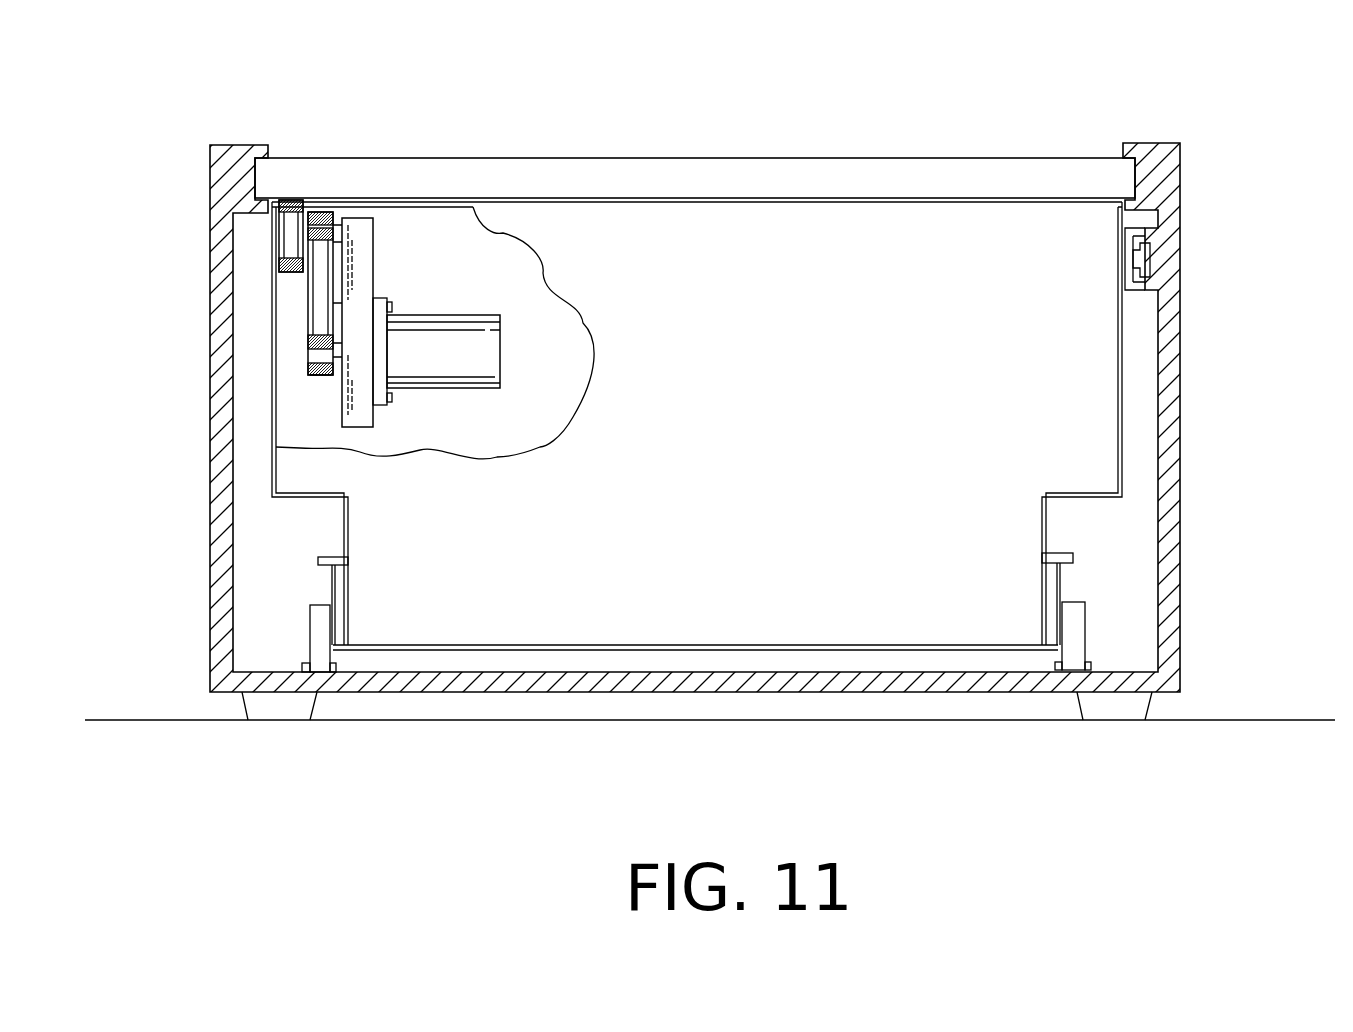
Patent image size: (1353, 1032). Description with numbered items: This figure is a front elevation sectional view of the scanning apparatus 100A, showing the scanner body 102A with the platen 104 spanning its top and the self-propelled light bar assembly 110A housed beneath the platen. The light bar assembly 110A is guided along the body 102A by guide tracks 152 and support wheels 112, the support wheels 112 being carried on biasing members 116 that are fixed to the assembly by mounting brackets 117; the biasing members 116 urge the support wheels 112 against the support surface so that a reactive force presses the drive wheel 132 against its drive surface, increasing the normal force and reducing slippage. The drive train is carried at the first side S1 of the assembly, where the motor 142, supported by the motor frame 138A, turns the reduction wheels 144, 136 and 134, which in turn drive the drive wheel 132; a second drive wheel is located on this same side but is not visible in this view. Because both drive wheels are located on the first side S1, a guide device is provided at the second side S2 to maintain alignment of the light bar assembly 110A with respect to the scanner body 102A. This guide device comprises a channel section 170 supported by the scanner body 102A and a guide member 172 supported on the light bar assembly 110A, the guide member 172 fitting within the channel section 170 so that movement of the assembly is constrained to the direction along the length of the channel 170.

The scanning apparatus 100A is at (1034, 74).
The scanner body 102A is at (1170, 402).
The platen 104 is at (714, 167).
The light bar assembly 110A is at (629, 426).
The first side S1 is at (262, 500).
The second side S2 is at (1125, 498).
The support wheels 112 is at (330, 613).
The biasing members 116 is at (332, 585).
The mounting brackets 117 is at (318, 561).
The guide tracks 152 is at (302, 665).
The drive wheel 132 is at (288, 240).
The reduction wheel 134 is at (320, 215).
The reduction wheel 136 is at (272, 269).
The motor frame 138A is at (372, 262).
The motor 142 is at (490, 352).
The reduction wheel 144 is at (318, 378).
The channel section 170 is at (1132, 290).
The guide member 172 is at (1138, 253).